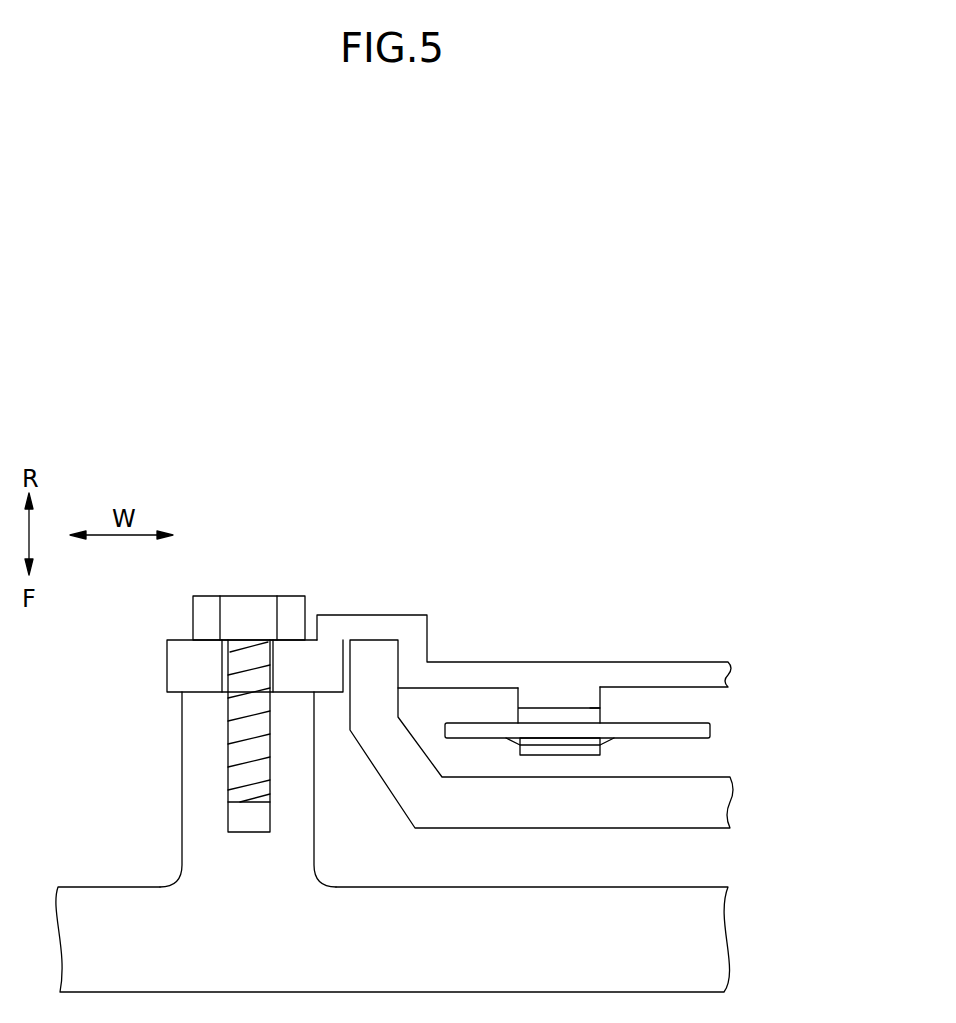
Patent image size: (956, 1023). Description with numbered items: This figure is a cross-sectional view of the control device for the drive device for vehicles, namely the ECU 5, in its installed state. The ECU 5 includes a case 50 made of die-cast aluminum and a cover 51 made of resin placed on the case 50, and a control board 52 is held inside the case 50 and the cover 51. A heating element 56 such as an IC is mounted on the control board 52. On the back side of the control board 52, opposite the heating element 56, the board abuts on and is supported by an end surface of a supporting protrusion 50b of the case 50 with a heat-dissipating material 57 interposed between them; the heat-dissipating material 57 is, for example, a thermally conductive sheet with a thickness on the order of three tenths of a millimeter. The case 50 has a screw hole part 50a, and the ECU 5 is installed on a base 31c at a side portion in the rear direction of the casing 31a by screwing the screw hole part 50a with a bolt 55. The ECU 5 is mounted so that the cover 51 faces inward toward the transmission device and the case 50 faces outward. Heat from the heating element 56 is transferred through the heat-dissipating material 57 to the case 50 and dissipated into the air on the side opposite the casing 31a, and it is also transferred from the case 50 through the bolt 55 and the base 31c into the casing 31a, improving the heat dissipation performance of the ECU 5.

The ECU 5 is at (483, 553).
The casing 31a is at (113, 887).
The base 31c is at (183, 778).
The case 50 is at (692, 662).
The screw hole part 50a is at (172, 674).
The supporting protrusion 50b is at (597, 700).
The cover 51 is at (680, 825).
The control board 52 is at (683, 738).
The bolt 55 is at (252, 602).
The heating element 56 is at (562, 750).
The heat-dissipating material 57 is at (537, 712).